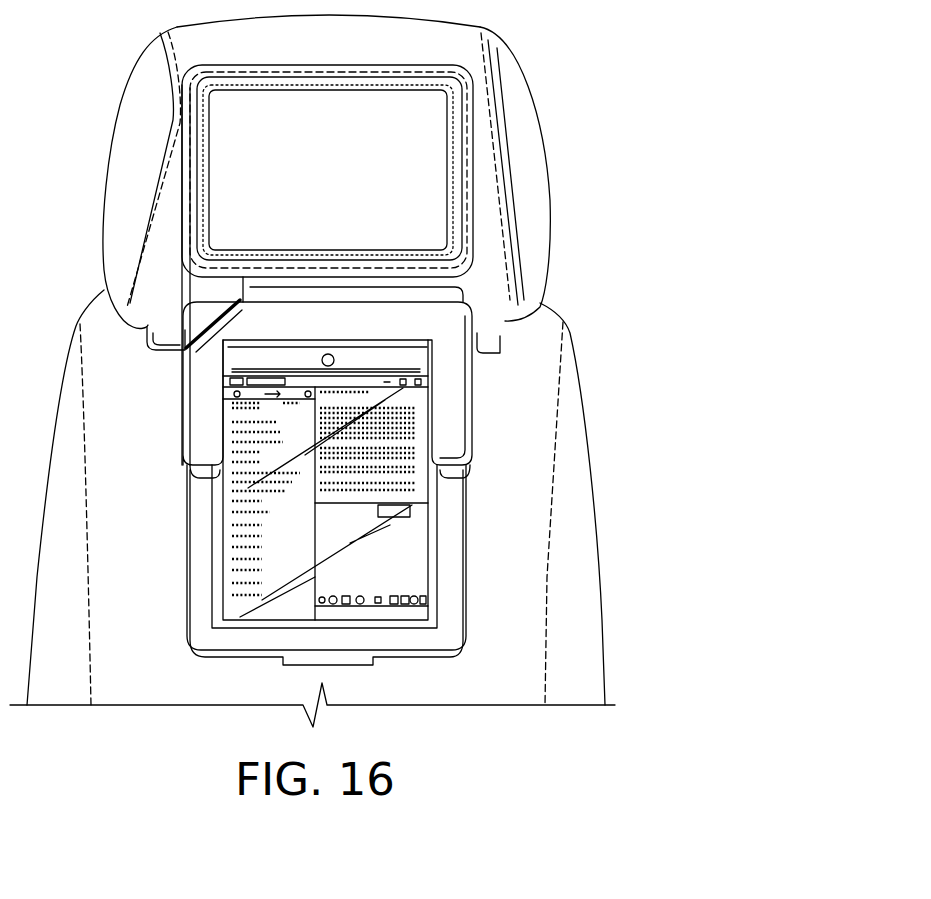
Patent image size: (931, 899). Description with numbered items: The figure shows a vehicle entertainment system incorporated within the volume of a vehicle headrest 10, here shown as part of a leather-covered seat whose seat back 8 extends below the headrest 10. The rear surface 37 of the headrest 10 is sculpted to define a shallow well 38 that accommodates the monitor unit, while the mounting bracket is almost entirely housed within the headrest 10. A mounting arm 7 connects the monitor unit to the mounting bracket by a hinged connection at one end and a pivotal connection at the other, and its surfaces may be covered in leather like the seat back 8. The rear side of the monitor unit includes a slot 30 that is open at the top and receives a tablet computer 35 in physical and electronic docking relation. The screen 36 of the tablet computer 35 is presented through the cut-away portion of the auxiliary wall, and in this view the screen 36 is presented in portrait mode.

The vehicle headrest 10 is at (118, 120).
The shallow well 38 is at (452, 178).
The rear surface 37 is at (158, 310).
The mounting arm 7 is at (203, 307).
The seat back 8 is at (125, 447).
The screen 36 is at (233, 548).
The slot 30 is at (462, 478).
The tablet computer 35 is at (222, 642).